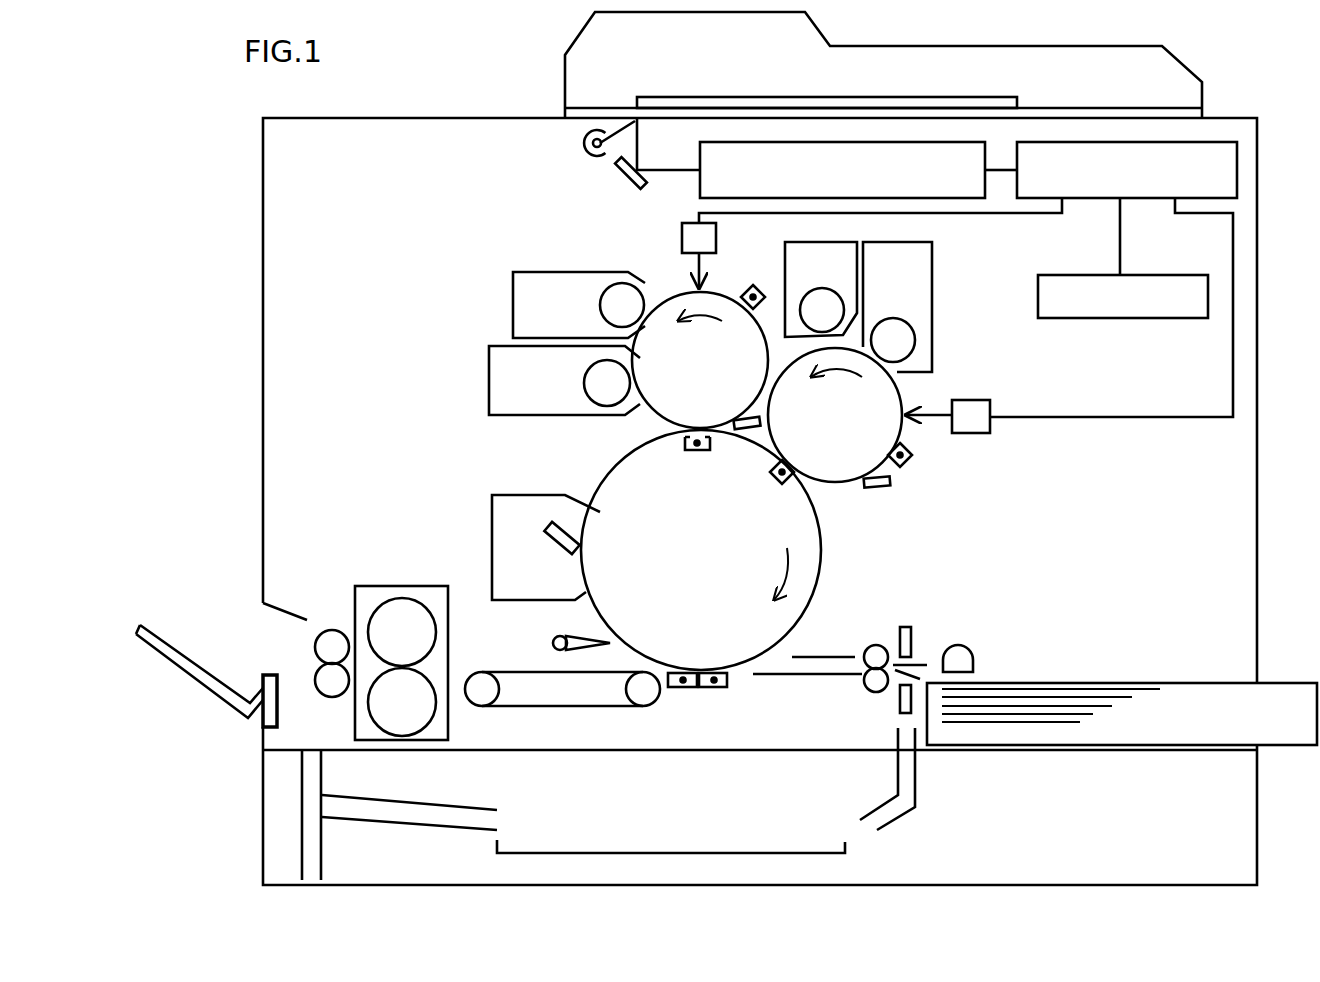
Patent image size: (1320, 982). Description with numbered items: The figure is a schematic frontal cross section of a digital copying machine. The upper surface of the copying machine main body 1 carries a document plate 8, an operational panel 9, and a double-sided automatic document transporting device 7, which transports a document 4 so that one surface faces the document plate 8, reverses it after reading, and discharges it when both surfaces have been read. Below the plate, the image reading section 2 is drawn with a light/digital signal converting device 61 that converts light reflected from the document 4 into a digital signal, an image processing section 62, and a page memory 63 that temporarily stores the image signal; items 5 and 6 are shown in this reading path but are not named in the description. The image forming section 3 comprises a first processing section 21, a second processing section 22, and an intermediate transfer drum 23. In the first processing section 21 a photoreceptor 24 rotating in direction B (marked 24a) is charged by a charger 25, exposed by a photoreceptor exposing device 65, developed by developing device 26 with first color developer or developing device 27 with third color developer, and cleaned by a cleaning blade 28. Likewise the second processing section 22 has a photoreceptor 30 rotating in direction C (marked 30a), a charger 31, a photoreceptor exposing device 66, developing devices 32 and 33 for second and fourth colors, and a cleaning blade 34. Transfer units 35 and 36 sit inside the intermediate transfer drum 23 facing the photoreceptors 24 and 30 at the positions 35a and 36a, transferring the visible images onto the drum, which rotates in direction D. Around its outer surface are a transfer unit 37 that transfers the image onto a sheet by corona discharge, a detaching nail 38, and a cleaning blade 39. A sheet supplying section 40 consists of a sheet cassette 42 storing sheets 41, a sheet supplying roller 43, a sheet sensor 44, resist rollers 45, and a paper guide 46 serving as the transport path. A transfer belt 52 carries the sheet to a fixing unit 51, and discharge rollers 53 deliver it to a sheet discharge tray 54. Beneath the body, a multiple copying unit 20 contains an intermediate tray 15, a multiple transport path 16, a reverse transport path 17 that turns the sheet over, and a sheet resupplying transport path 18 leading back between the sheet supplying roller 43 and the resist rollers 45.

The copying machine main body 1 is at (760, 463).
The image reading section 2 is at (586, 162).
The image forming section 3 is at (381, 336).
The document 4 is at (742, 97).
The exposure lamp 5 is at (584, 148).
The mirror 6 is at (620, 172).
The double-sided automatic document transporting device 7 is at (1158, 62).
The document plate 8 is at (1105, 108).
The operational panel 9 is at (478, 118).
The intermediate tray 15 is at (850, 855).
The multiple transport path 16 is at (432, 805).
The reverse transport path 17 is at (322, 855).
The sheet resupplying transport path 18 is at (918, 790).
The multiple copying unit 20 is at (1257, 862).
The first processing section 21 is at (590, 375).
The second processing section 22 is at (885, 395).
The intermediate transfer drum 23 is at (684, 578).
The photoreceptor 24 is at (766, 362).
The rotation direction of first intermediate drum 24a is at (670, 283).
The charger 25 is at (754, 273).
The developing device 26 is at (513, 285).
The developing device 27 is at (489, 368).
The cleaning blade 28 is at (748, 430).
The photoreceptor 30 is at (890, 387).
The rotation direction of second intermediate drum 30a is at (918, 404).
The charger 31 is at (912, 466).
The developing device 32 is at (913, 312).
The developing device 33 is at (848, 275).
The cleaning blade 34 is at (879, 490).
The transfer unit 35 is at (697, 455).
The transfer position 35a is at (696, 426).
The transfer unit 36 is at (768, 573).
The transfer position 36a is at (795, 465).
The transfer unit 37 is at (710, 689).
The detaching nail 38 is at (552, 640).
The cleaning blade 39 is at (553, 523).
The sheet supplying section 40 is at (1078, 590).
The sheets 41 is at (1060, 697).
The sheet cassette 42 is at (1165, 683).
The sheet supplying roller 43 is at (962, 646).
The sheet sensor 44 is at (906, 627).
The resist rollers 45 is at (866, 650).
The paper guide 46 is at (835, 678).
The fixing unit 51 is at (408, 586).
The transfer belt 52 is at (595, 708).
The discharge rollers 53 is at (332, 628).
The sheet discharge tray 54 is at (175, 640).
The light/digital signal converting device 61 is at (700, 152).
The image processing section 62 is at (1100, 200).
The page memory 63 is at (1092, 320).
The photoreceptor exposing device 65 is at (682, 230).
The photoreceptor exposing device 66 is at (990, 430).